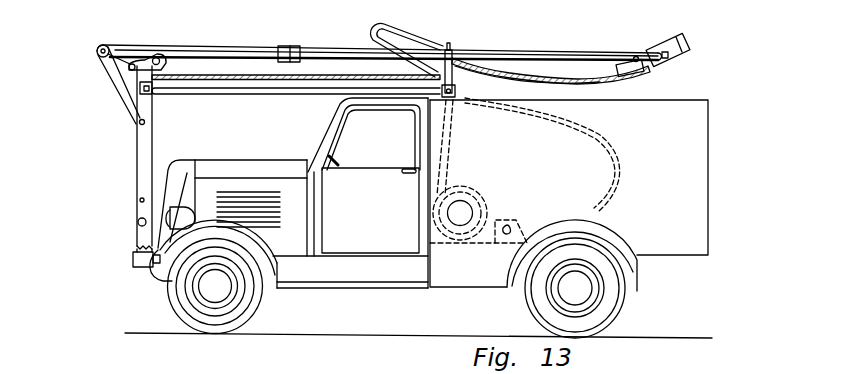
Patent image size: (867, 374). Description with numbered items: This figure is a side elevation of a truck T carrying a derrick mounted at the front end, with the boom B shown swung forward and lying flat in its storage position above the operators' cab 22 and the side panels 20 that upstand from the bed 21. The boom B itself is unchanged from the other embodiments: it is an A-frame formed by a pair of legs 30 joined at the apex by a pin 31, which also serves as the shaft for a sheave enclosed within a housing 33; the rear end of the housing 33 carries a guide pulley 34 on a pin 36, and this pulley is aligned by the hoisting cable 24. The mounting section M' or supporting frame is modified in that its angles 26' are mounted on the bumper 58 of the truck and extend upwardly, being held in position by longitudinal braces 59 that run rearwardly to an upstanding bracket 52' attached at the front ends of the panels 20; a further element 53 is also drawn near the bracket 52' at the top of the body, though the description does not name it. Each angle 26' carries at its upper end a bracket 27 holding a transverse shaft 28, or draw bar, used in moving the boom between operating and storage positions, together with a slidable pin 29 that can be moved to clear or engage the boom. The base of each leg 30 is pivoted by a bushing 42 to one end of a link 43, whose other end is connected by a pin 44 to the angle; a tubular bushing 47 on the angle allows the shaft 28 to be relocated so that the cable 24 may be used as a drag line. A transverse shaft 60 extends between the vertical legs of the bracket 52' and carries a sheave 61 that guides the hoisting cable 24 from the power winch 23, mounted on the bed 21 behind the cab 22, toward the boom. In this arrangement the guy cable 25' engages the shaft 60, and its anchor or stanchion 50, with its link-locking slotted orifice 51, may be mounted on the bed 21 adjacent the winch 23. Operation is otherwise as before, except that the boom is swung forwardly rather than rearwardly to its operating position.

The side panels 20 is at (675, 196).
The bed 21 is at (493, 244).
The operators' cab 22 is at (372, 210).
The power winch 23 is at (466, 201).
The hoisting cable 24 is at (249, 74).
The guy cable 25' is at (494, 114).
The angles 26' is at (126, 159).
The bracket 27 is at (143, 60).
The transverse shaft 28 is at (157, 57).
The pin 29 is at (129, 68).
The legs 30 is at (340, 48).
The pin 31 is at (670, 58).
The housing 33 is at (690, 50).
The guide pulley 34 is at (622, 76).
The pin 36 is at (635, 56).
The bushing 42 is at (100, 48).
The link 43 is at (122, 90).
The pin 44 is at (146, 122).
The tubular bushing 47 is at (138, 222).
The stanchion 50 is at (506, 216).
The slotted orifice 51 is at (518, 233).
The bracket 52' is at (551, 58).
The post 53 is at (452, 47).
The bumper 58 is at (133, 260).
The longitudinal braces 59 is at (262, 95).
The transverse shaft 60 is at (458, 96).
The sheave 61 is at (460, 89).
The boom B is at (370, 23).
The mounting section M' is at (120, 199).
The truck T is at (350, 270).